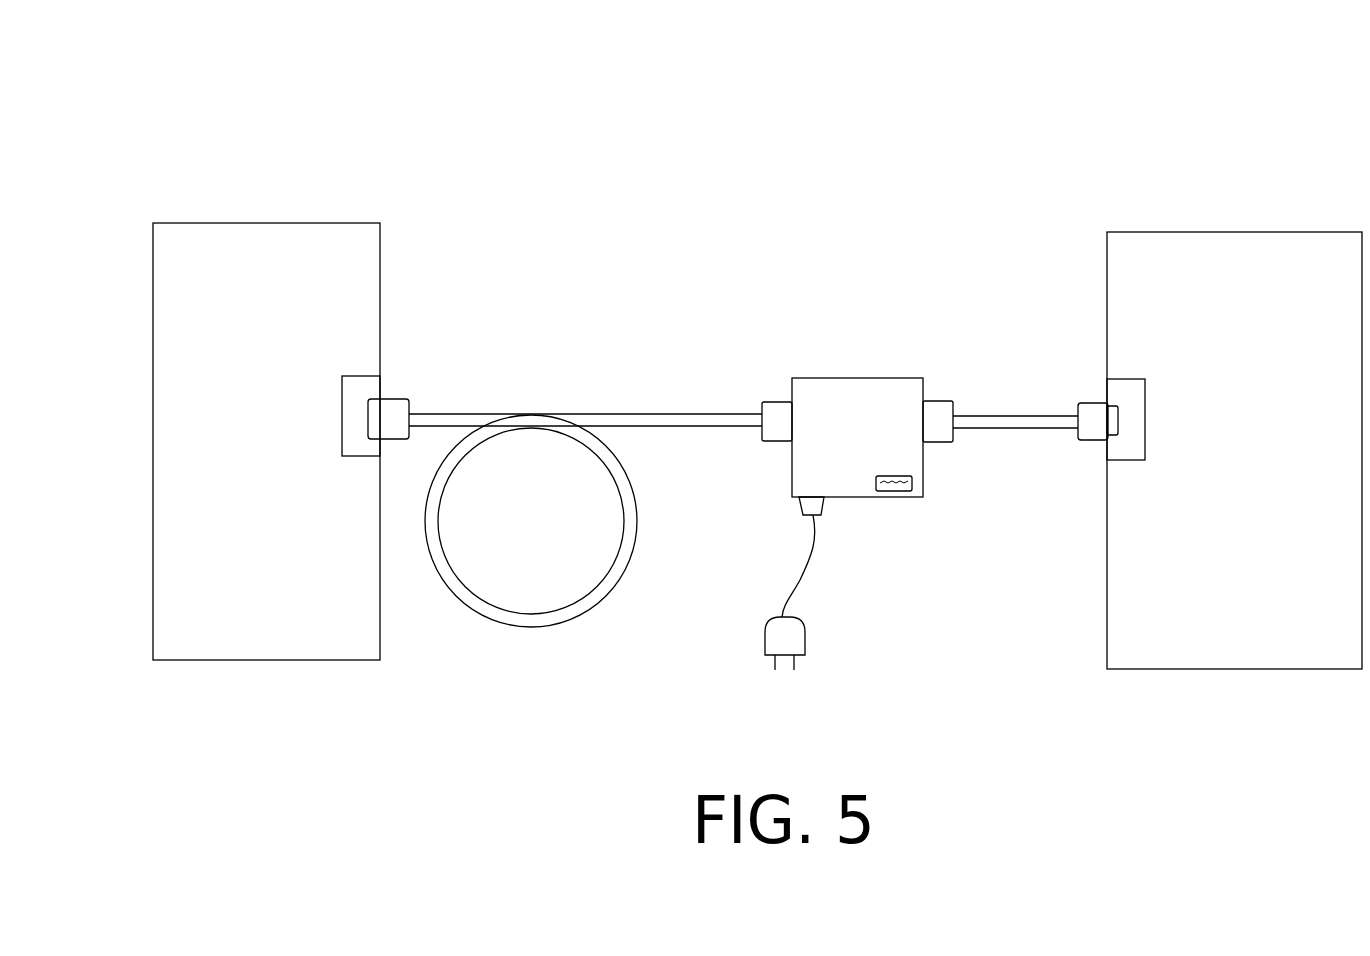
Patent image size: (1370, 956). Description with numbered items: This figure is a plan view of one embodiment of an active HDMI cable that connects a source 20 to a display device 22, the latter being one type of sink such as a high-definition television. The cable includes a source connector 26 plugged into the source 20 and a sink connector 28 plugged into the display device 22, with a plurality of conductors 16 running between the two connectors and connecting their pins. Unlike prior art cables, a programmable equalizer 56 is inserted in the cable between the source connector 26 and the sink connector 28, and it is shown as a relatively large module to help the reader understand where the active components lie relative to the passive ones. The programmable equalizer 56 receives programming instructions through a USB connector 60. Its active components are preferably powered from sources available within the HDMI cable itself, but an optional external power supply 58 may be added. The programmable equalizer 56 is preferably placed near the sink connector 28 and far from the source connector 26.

The conductors 16 is at (607, 414).
The source 20 is at (271, 257).
The display device 22 is at (1170, 253).
The source connector 26 is at (393, 416).
The sink connector 28 is at (1100, 407).
The programmable equalizer 56 is at (822, 395).
The external power supply 58 is at (775, 638).
The USB connector 60 is at (897, 492).